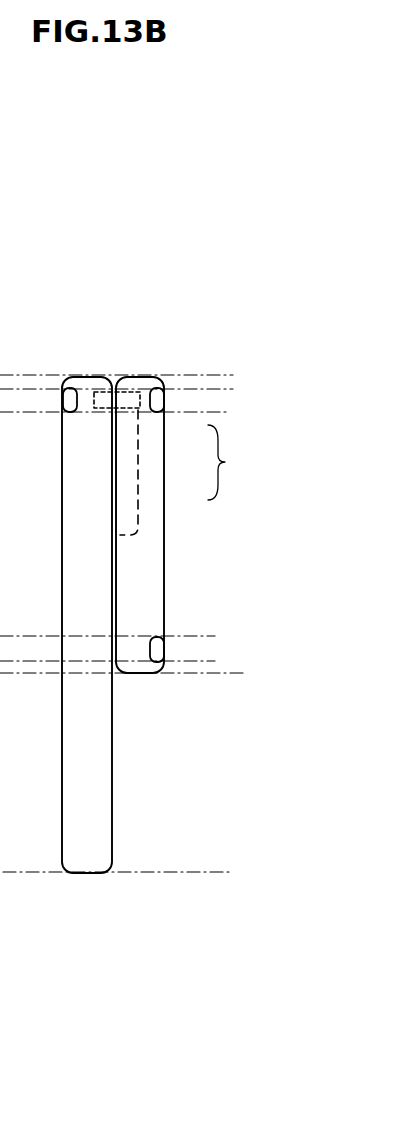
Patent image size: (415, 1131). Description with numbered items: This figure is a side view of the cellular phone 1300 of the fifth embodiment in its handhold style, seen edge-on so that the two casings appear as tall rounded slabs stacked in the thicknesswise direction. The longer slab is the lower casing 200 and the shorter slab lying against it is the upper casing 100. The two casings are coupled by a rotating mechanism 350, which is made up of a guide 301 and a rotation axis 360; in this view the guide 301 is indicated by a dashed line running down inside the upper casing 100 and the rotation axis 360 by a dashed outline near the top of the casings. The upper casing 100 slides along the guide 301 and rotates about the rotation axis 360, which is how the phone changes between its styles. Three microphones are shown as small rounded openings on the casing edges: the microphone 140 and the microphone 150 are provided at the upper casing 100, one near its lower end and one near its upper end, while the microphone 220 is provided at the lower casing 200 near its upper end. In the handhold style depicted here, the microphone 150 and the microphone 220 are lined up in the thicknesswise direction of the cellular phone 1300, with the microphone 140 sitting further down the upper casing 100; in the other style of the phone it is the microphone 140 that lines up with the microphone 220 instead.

The cellular phone 1300 is at (113, 229).
The upper casing 100 is at (142, 602).
The lower casing 200 is at (85, 832).
The microphone 220 is at (66, 400).
The microphone 150 is at (157, 402).
The microphone 140 is at (162, 657).
The rotation axis 360 is at (128, 402).
The guide 301 is at (139, 483).
The rotating mechanism 350 is at (234, 462).